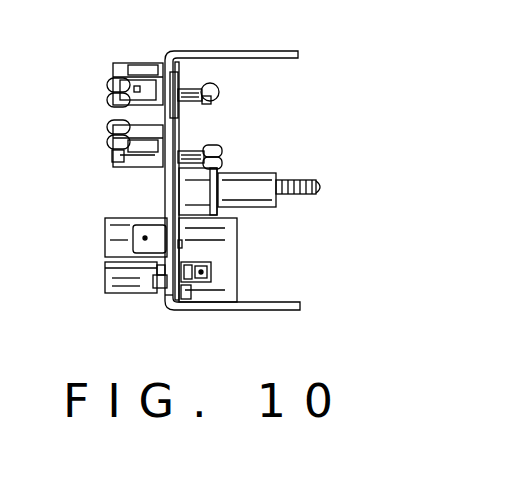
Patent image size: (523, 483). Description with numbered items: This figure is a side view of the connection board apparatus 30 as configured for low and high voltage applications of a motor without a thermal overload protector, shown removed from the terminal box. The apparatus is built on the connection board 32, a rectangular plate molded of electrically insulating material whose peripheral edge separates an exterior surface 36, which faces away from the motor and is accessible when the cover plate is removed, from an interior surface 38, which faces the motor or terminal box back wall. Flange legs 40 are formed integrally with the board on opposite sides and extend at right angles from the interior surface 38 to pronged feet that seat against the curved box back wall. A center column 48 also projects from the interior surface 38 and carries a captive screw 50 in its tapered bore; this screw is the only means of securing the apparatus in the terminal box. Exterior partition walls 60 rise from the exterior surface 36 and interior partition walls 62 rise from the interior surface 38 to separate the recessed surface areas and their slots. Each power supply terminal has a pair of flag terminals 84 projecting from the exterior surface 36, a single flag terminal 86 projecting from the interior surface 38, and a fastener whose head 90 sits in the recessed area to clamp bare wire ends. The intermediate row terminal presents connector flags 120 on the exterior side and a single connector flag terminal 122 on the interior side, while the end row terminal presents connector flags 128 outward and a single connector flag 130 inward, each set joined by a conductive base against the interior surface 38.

The connection board apparatus 30 is at (124, 196).
The connection board 32 is at (163, 297).
The exterior surface 36 is at (173, 187).
The interior surface 38 is at (176, 192).
The flange legs 40 is at (288, 50).
The center column 48 is at (250, 182).
The screw 50 is at (316, 192).
The exterior partition walls 60 is at (147, 278).
The interior partition walls 62 is at (222, 248).
The flag terminals 84 is at (124, 242).
The single flag terminal 86 is at (216, 280).
The head 90 is at (157, 284).
The connector flags 120 is at (110, 124).
The single connector flag terminal 122 is at (222, 145).
The connector flags 128 is at (130, 63).
The single connector flag 130 is at (222, 90).